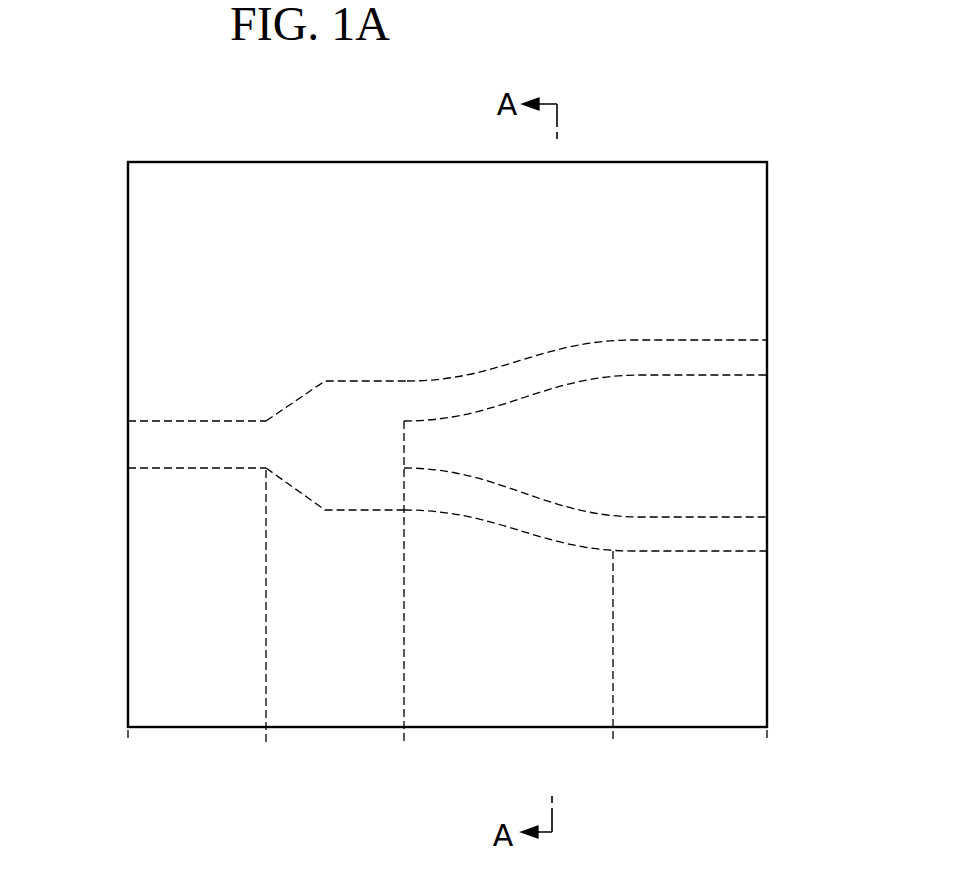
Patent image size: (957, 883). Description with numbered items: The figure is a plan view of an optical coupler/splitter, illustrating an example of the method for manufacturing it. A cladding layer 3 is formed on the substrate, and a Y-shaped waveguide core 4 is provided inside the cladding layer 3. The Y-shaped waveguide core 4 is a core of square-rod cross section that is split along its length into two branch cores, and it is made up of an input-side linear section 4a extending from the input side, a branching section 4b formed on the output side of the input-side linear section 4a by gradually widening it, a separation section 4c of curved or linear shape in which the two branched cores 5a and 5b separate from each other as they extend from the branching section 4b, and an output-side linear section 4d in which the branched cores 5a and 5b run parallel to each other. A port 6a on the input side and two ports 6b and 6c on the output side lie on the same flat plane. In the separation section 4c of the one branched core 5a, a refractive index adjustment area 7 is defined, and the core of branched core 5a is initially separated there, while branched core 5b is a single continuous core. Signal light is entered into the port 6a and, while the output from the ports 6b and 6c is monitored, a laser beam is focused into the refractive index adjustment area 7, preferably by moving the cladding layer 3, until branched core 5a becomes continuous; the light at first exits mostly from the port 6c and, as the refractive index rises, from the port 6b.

The cladding layer 3 is at (750, 200).
The Y-shaped waveguide core 4 is at (700, 338).
The input-side linear section 4a is at (197, 635).
The branching section 4b is at (335, 610).
The separation section 4c is at (508, 675).
The output-side linear section 4d is at (690, 765).
The branched core 5a is at (752, 353).
The branched core 5b is at (743, 540).
The port 6a is at (147, 450).
The port 6b is at (758, 361).
The port 6c is at (755, 540).
The refractive index adjustment area 7 is at (513, 338).